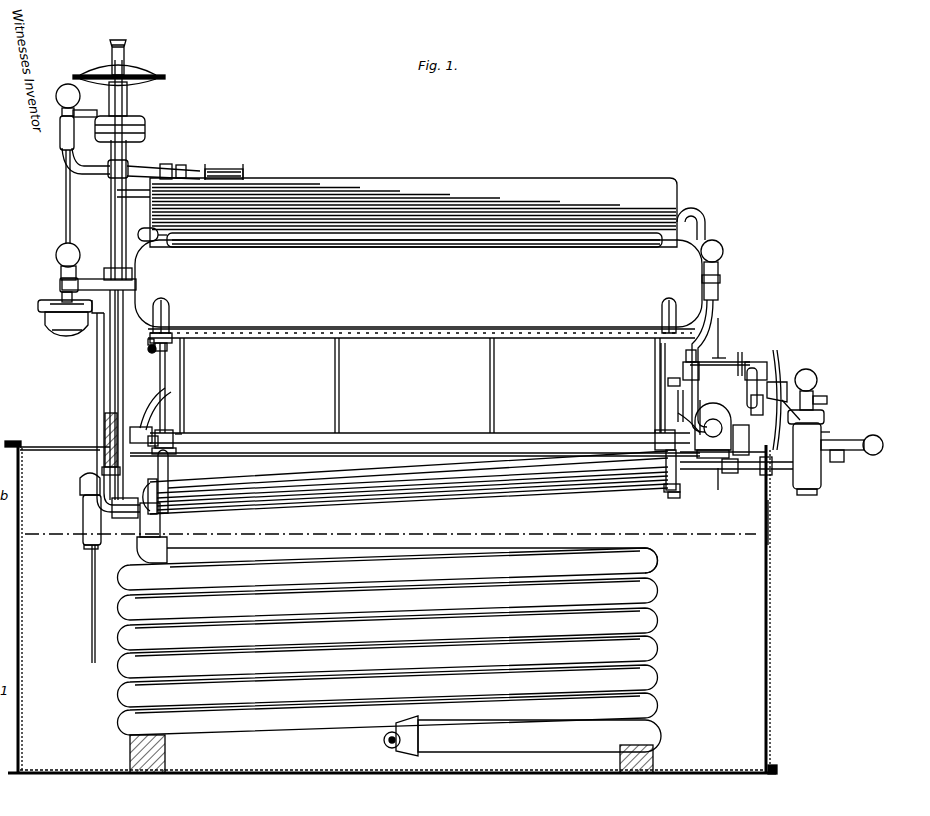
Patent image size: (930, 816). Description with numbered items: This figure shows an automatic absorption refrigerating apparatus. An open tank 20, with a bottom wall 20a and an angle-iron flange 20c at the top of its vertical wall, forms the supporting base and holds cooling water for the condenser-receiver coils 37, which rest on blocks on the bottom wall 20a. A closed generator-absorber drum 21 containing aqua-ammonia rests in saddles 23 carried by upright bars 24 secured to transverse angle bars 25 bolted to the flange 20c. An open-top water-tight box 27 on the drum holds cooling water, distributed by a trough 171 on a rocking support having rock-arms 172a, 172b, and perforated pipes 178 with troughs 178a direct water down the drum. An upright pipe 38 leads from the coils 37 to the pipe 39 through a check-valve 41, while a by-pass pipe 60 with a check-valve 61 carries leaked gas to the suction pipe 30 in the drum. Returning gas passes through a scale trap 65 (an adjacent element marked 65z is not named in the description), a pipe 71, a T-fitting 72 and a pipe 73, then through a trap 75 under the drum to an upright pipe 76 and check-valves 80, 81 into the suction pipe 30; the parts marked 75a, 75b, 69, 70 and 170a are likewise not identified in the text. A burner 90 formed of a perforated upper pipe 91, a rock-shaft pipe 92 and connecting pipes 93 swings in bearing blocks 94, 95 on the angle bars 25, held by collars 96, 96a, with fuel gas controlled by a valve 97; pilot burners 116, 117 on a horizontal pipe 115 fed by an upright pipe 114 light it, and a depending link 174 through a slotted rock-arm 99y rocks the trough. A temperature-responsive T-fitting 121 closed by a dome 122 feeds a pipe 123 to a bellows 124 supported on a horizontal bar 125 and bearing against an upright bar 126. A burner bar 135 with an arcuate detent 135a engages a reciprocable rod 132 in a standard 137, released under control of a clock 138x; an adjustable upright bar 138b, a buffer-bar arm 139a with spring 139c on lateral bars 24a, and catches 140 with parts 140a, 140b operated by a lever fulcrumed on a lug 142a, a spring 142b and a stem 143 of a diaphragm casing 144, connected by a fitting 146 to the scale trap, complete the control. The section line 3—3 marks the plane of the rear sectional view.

The open tank 20 is at (770, 614).
The bottom wall 20a is at (290, 768).
The flange 20c is at (18, 446).
The generator-absorber drum 21 is at (418, 283).
The saddle 23 is at (170, 310).
The upright bar 24 is at (185, 372).
The laterally extending bar 24a is at (700, 412).
The angle bar 25 is at (190, 445).
The box 27 is at (318, 186).
The absorption or suction pipe 30 is at (108, 276).
The condenser-receiver coil 37 is at (662, 614).
The upright pipe 38 is at (136, 286).
The pipe 39 is at (63, 157).
The check-valve 41 is at (56, 104).
The by-pass pipe 60 is at (62, 174).
The check-valve 61 is at (60, 270).
The scale trap 65 is at (822, 486).
The valve handle 65z is at (864, 440).
The knob 69 is at (819, 379).
The pipe connection 70 is at (827, 399).
The pipe 71 is at (786, 472).
The T-fitting 72 is at (740, 458).
The pipe 73 is at (670, 502).
The trap 75 is at (500, 498).
The cylinder top 75a is at (195, 485).
The cylinder end 75b is at (664, 490).
The upright pipe 76 is at (97, 355).
The check-valve 80 is at (42, 316).
The check-valve 81 is at (58, 290).
The burner 90 is at (138, 418).
The upper pipe 91 is at (256, 338).
The lower pipe 92 is at (244, 442).
The connecting pipe 93 is at (166, 366).
The bearing block 94 is at (175, 440).
The bearing block 95 is at (658, 436).
The collar 96 is at (185, 438).
The collar 96a is at (680, 415).
The controlling valve 97 is at (152, 440).
The slotted rock-arm 99y is at (103, 446).
The upright pipe 114 is at (150, 352).
The horizontal pipe 115 is at (150, 342).
The pilot burner 116 is at (173, 346).
The pilot burner 117 is at (145, 120).
The T-fitting 121 is at (718, 268).
The hollow dome or ball 122 is at (716, 242).
The pipe 123 is at (698, 330).
The metallic bellows 124 is at (666, 478).
The horizontal bar 125 is at (720, 458).
The fixed upright bar 126 is at (705, 455).
The vertically reciprocable rod 132 is at (678, 398).
The burner bar 135 is at (692, 352).
The arcuate detent member 135a is at (757, 372).
The upright standard 137 is at (778, 372).
The upright bar 138b is at (770, 520).
The clock 138x is at (826, 434).
The inclined arm 139a is at (700, 366).
The coiled spring 139c is at (668, 380).
The reciprocable catch 140 is at (758, 348).
The catch part 140a is at (710, 362).
The catch part 140b is at (752, 362).
The lug 142a is at (760, 398).
The spring 142b is at (824, 416).
The stem 143 is at (786, 386).
The diaphragm casing 144 is at (796, 412).
The fitting 146 is at (844, 460).
The pipe 170a is at (120, 465).
The trough 171 is at (230, 167).
The rock-arm 172a is at (132, 188).
The rock-arm 172b is at (140, 172).
The depending link 174 is at (110, 392).
The perforated pipe 178 is at (522, 234).
The trough 178a is at (508, 240).
The section line 3 is at (720, 404).